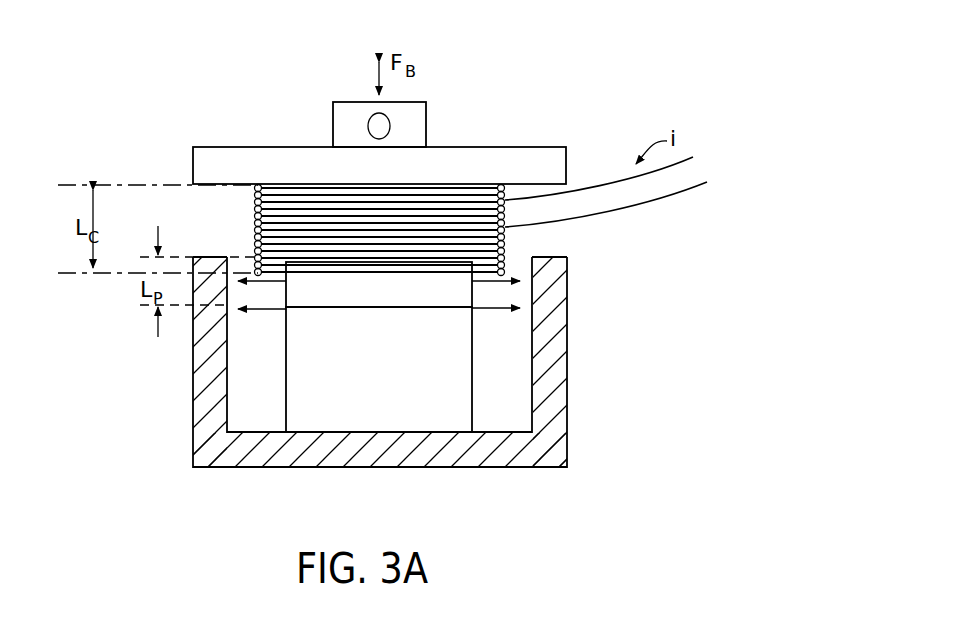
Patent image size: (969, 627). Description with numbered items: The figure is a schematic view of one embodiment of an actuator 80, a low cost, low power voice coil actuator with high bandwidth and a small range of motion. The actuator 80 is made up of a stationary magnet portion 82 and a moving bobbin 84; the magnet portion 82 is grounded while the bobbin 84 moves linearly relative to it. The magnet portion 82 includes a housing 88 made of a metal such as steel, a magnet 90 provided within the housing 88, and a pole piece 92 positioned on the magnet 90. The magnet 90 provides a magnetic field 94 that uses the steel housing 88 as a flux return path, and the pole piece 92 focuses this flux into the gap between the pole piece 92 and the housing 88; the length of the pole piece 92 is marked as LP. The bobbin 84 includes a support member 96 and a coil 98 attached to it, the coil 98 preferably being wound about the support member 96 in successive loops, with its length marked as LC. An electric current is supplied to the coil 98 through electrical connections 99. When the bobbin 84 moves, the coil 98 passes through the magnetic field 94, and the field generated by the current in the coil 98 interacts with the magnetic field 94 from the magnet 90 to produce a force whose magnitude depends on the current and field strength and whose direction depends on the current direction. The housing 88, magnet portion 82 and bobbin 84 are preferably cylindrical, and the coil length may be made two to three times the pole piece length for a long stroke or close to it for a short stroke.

The actuator 80 is at (147, 83).
The magnet portion 82 is at (431, 381).
The bobbin 84 is at (570, 139).
The housing 88 is at (495, 457).
The magnet 90 is at (455, 393).
The pole piece 92 is at (305, 300).
The magnetic field 94 is at (263, 280).
The support member 96 is at (333, 128).
The coil 98 is at (252, 212).
The electrical connections 99 is at (660, 202).